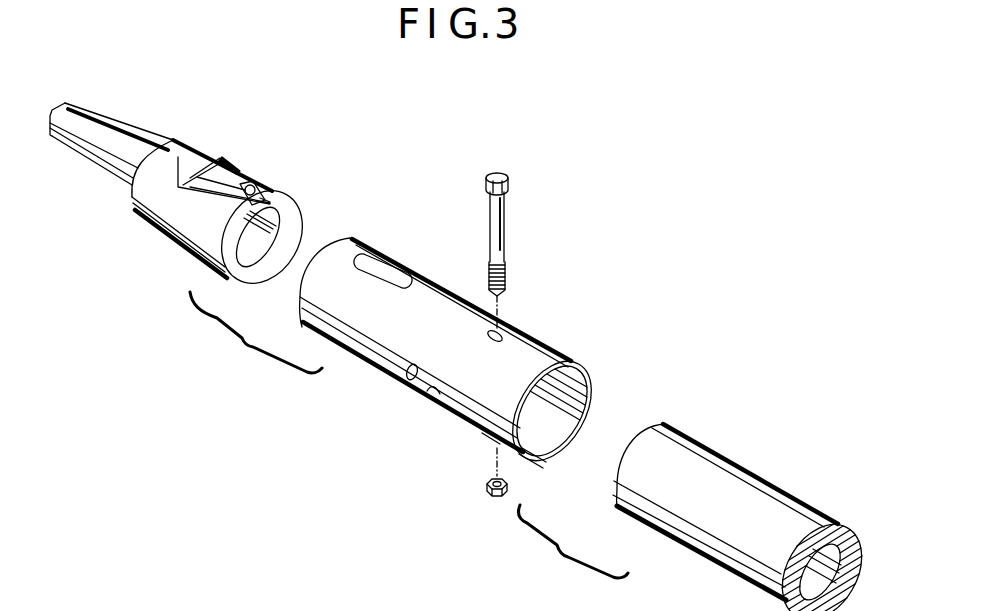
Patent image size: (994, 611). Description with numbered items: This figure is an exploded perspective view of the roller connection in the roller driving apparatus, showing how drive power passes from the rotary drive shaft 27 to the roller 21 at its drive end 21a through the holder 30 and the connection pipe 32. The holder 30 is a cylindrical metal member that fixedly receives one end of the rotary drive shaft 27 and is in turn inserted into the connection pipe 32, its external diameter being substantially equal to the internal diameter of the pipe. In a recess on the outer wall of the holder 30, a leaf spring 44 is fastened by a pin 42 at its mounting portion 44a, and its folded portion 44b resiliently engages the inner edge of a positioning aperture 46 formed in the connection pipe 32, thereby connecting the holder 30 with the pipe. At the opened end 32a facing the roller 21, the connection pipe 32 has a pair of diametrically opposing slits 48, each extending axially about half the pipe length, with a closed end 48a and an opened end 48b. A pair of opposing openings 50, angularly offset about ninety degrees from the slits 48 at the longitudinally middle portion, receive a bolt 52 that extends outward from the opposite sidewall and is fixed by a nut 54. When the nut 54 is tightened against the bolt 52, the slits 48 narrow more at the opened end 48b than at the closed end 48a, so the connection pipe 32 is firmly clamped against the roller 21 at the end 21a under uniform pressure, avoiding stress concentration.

The roller 21 is at (755, 480).
The drive end of the roller 21a is at (678, 440).
The rotary drive shaft 27 is at (102, 118).
The holder 30 is at (168, 247).
The connection pipe 32 is at (424, 297).
The opened end of the connection pipe 32a is at (553, 462).
The pin 42 is at (256, 187).
The leaf spring 44 is at (238, 172).
The mounting portion of the leaf spring 44a is at (270, 187).
The folded portion of the leaf spring 44b is at (230, 165).
The positioning aperture 46 is at (374, 252).
The slit 48 is at (428, 394).
The closed end of the slit 48a is at (407, 392).
The opened end of the slit 48b is at (590, 402).
The opening 50 is at (502, 328).
The bolt 52 is at (505, 213).
The nut 54 is at (488, 486).